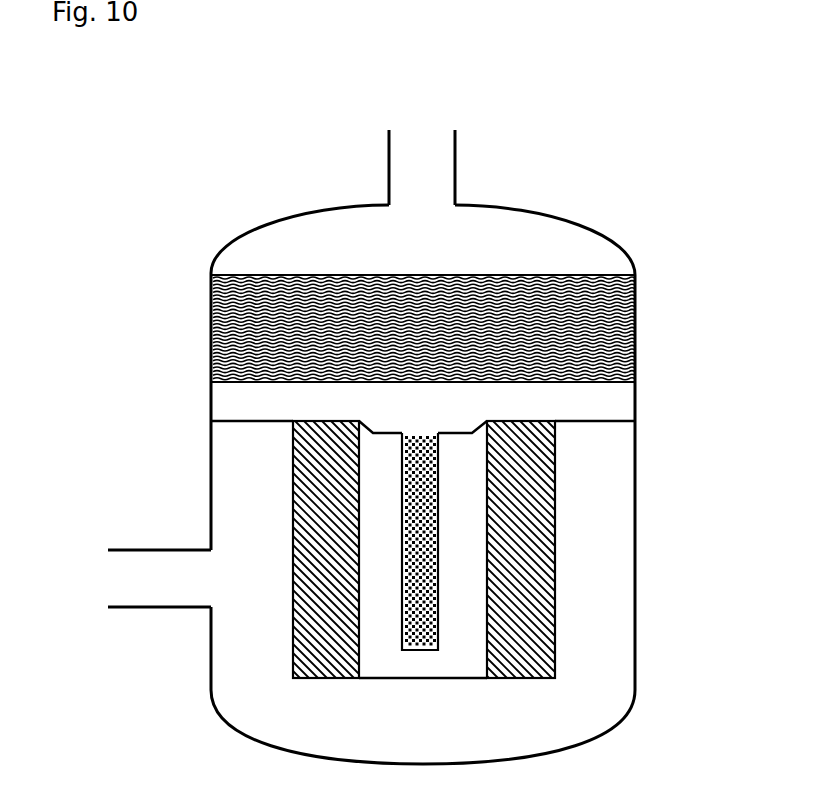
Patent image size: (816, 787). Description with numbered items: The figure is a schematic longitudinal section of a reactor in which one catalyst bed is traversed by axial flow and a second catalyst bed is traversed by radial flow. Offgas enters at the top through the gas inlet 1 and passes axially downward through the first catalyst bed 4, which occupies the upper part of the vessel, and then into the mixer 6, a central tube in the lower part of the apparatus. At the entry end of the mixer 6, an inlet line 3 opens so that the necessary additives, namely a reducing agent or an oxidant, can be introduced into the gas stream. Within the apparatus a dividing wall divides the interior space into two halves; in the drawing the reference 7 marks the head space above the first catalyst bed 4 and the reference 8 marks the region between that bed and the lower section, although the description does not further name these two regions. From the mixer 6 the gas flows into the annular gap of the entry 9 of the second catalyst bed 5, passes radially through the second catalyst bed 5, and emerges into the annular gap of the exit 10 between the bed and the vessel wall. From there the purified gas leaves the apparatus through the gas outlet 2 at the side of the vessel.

The gas inlet 1 is at (422, 141).
The gas outlet 2 is at (133, 578).
The inlet line 3 is at (422, 424).
The first catalyst bed 4 is at (423, 328).
The second catalyst bed 5 is at (424, 549).
The mixer 6 is at (434, 661).
The upper head space 7 is at (615, 262).
The distribution gap 8 is at (461, 412).
The annular gap of the entry 9 is at (465, 517).
The annular gap of the exit 10 is at (581, 593).